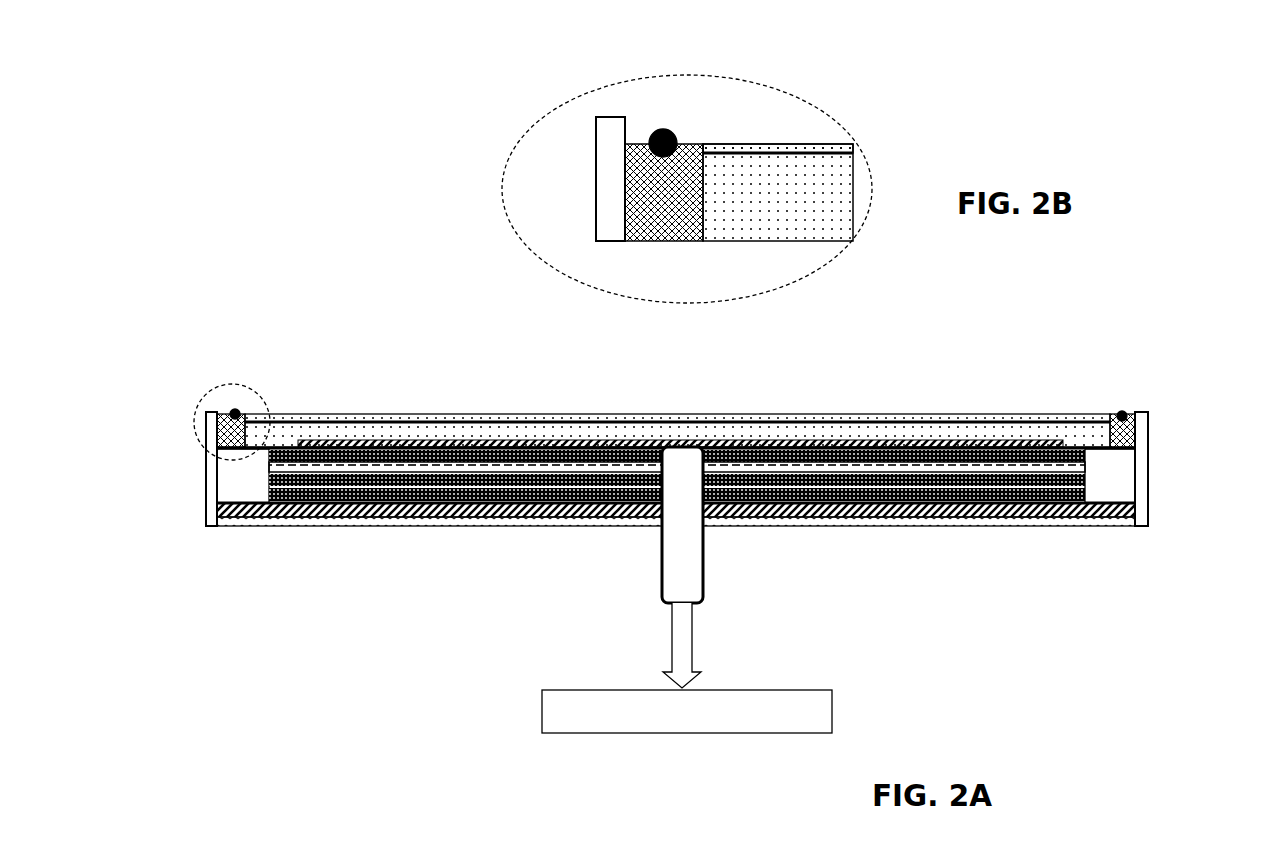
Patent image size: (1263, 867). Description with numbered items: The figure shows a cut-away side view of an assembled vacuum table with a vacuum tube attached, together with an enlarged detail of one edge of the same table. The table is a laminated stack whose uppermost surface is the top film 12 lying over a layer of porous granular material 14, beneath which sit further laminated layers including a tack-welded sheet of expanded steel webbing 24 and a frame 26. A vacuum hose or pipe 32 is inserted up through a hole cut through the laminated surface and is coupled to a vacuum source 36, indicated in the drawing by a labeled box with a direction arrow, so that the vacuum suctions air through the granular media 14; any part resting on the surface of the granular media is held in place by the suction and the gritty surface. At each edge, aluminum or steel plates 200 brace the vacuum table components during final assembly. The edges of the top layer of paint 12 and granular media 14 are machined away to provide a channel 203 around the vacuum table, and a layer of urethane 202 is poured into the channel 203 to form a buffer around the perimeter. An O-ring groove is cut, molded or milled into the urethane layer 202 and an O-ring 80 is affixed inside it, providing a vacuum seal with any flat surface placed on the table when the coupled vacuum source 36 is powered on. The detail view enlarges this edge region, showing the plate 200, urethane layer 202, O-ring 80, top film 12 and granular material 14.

In FIG. 2B, the top film 12 is at (798, 144).
In FIG. 2A, the top film 12 is at (677, 418).
In FIG. 2B, the layer of porous granular material 14 is at (848, 184).
In FIG. 2A, the layer of porous granular material 14 is at (677, 434).
In FIG. 2A, the tack-welded sheet of expanded steel webbing 24 is at (1010, 515).
In FIG. 2A, the frame 26 is at (1110, 512).
In FIG. 2A, the vacuum hose or pipe 32 is at (660, 557).
In FIG. 2A, the vacuum source 36 is at (540, 708).
In FIG. 2B, the O-ring 80 is at (670, 130).
In FIG. 2A, the O-ring 80 is at (1123, 408).
In FIG. 2B, the aluminum or steel plates 200 is at (596, 168).
In FIG. 2A, the aluminum or steel plates 200 is at (1148, 490).
In FIG. 2B, the layer of urethane 202 is at (658, 237).
In FIG. 2A, the layer of urethane 202 is at (228, 410).
In FIG. 2A, the channel 203 is at (260, 417).